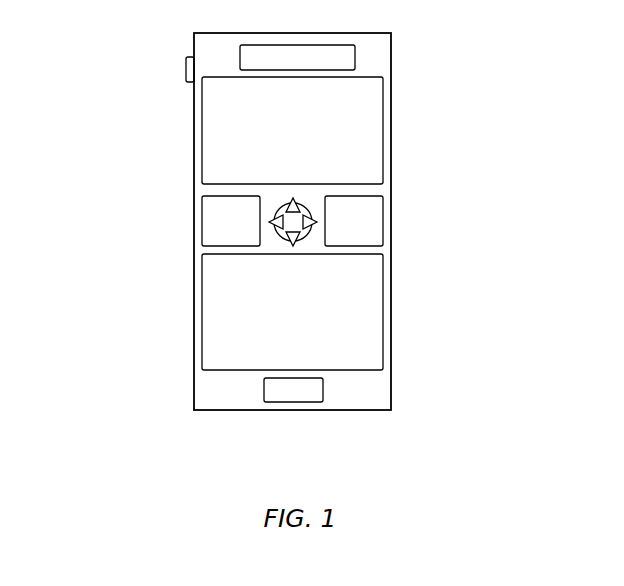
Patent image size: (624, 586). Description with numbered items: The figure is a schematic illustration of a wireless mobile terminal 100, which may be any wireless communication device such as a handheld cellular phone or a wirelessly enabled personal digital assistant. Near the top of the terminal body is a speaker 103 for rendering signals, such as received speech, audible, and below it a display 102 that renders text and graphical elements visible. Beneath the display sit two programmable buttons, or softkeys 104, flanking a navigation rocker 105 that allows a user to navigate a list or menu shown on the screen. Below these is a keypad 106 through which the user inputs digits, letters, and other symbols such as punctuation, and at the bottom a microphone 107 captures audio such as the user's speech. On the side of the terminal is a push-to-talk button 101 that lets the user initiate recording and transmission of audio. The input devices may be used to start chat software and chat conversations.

The wireless mobile terminal 100 is at (292, 257).
The push-to-talk button 101 is at (119, 56).
The display 102 is at (225, 130).
The speaker 103 is at (373, 42).
The softkeys 104 is at (300, 208).
The navigation rocker 105 is at (225, 193).
The keypad 106 is at (355, 306).
The microphone 107 is at (228, 414).